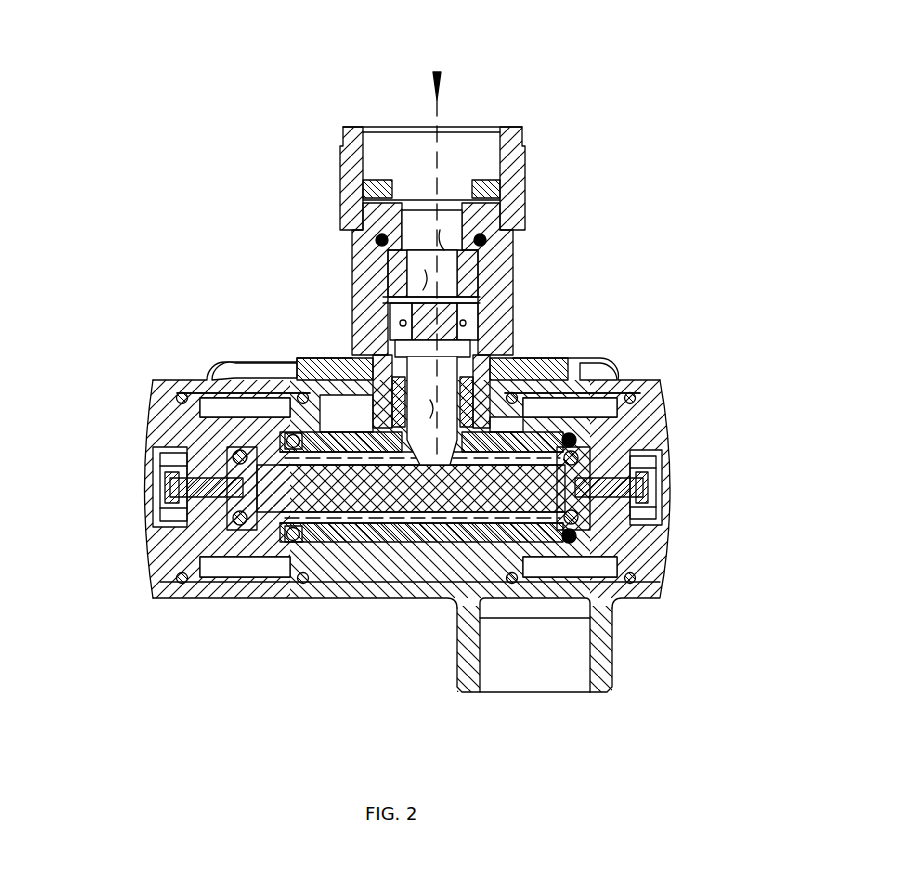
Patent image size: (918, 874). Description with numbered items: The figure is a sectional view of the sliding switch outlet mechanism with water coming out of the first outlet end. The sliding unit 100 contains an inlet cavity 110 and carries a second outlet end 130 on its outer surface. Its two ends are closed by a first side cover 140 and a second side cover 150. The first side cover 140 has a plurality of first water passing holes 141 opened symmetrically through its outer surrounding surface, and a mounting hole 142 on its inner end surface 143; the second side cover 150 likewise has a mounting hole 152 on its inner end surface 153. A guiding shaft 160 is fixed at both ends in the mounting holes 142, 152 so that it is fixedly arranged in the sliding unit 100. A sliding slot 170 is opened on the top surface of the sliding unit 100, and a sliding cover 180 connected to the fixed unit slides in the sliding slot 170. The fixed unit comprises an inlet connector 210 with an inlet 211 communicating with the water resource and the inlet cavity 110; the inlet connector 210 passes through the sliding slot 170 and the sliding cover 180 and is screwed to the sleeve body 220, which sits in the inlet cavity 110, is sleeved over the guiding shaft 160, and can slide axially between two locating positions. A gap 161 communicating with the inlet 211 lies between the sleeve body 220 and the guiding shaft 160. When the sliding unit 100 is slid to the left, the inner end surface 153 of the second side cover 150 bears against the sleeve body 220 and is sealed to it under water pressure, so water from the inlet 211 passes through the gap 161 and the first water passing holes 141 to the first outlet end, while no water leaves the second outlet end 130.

The sliding unit 100 is at (692, 493).
The inlet cavity 110 is at (455, 393).
The second inlet end 130 is at (580, 662).
The first side cover 140 is at (148, 415).
The first water passing holes 141 is at (285, 436).
The mounting hole 142 is at (250, 523).
The inner end surface 143 is at (217, 478).
The second side cover 150 is at (676, 415).
The mounting hole 152 is at (576, 540).
The inner end surface 153 is at (585, 505).
The guiding shaft 160 is at (300, 490).
The gap 161 is at (373, 412).
The sliding slot 170 is at (250, 378).
The sliding cover 180 is at (313, 356).
The inlet connector 210 is at (520, 258).
The inlet 211 is at (373, 132).
The sleeve body 220 is at (400, 538).